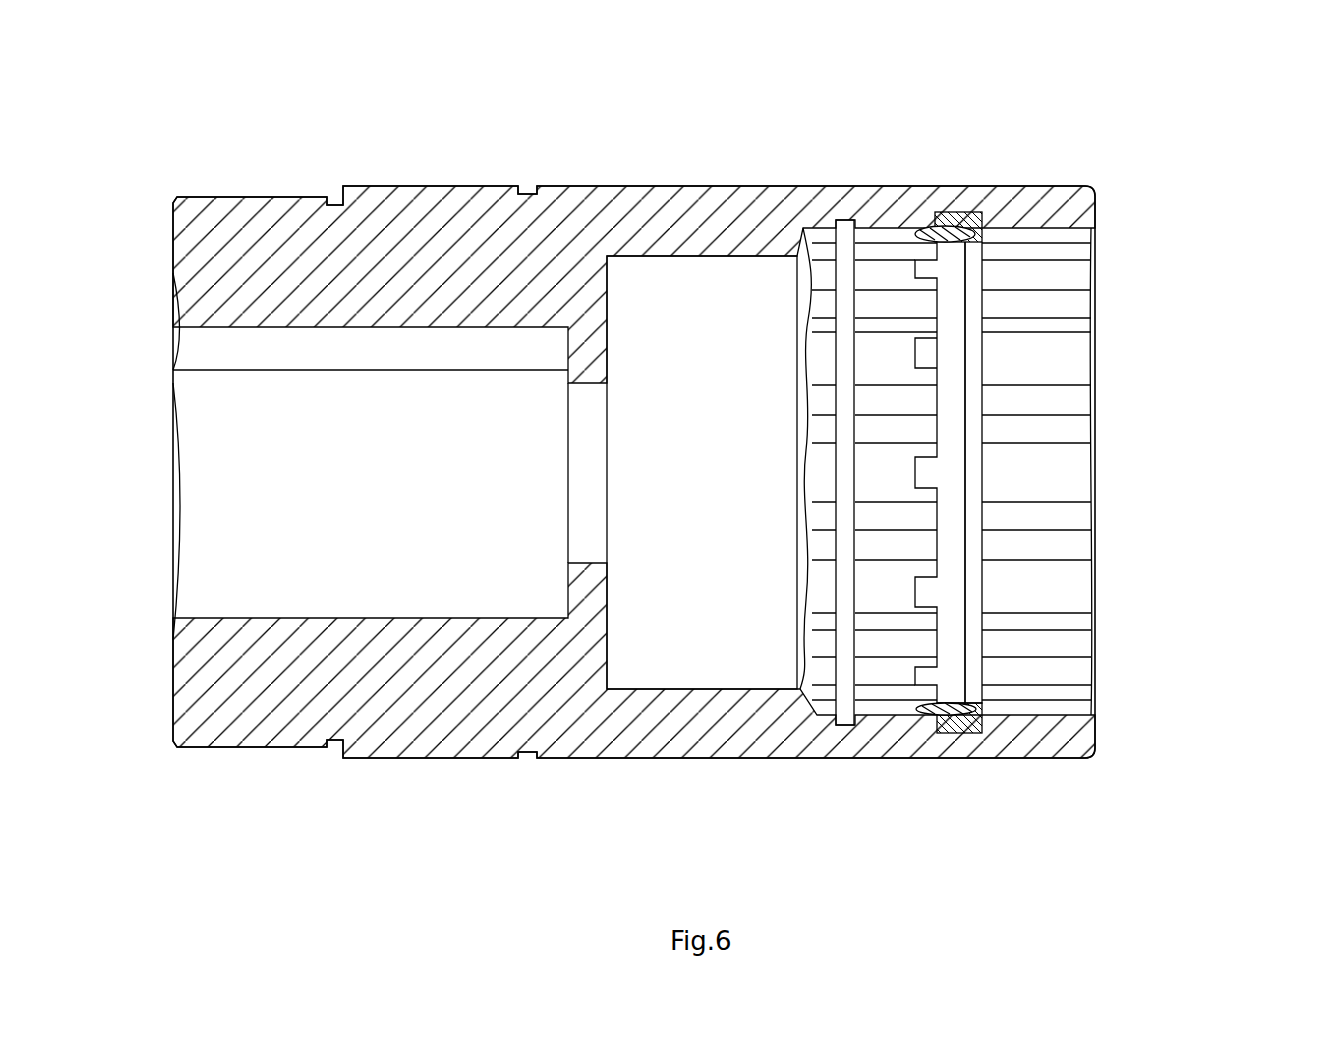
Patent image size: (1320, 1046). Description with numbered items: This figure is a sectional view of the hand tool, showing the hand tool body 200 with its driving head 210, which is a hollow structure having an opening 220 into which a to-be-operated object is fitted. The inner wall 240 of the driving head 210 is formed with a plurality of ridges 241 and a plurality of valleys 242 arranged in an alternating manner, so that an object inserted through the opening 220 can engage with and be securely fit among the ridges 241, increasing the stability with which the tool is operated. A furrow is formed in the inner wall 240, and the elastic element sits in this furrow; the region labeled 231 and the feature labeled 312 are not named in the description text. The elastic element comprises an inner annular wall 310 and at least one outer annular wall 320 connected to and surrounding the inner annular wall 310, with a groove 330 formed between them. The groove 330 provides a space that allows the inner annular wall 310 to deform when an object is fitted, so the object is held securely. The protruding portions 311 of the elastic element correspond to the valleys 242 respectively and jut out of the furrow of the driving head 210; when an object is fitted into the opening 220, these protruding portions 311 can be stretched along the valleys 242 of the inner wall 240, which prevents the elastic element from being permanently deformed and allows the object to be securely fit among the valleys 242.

The hand tool body 200 is at (237, 158).
The driving head 210 is at (752, 760).
The opening 220 is at (1040, 583).
The groove 231 is at (985, 688).
The inner wall 240 is at (1138, 454).
The ridges 241 is at (1072, 407).
The valleys 242 is at (1068, 472).
The inner annular wall 310 is at (782, 403).
The protruding portions 311 is at (953, 227).
The tooth 312 is at (917, 350).
The outer annular wall 320 is at (963, 217).
The groove 330 is at (948, 217).